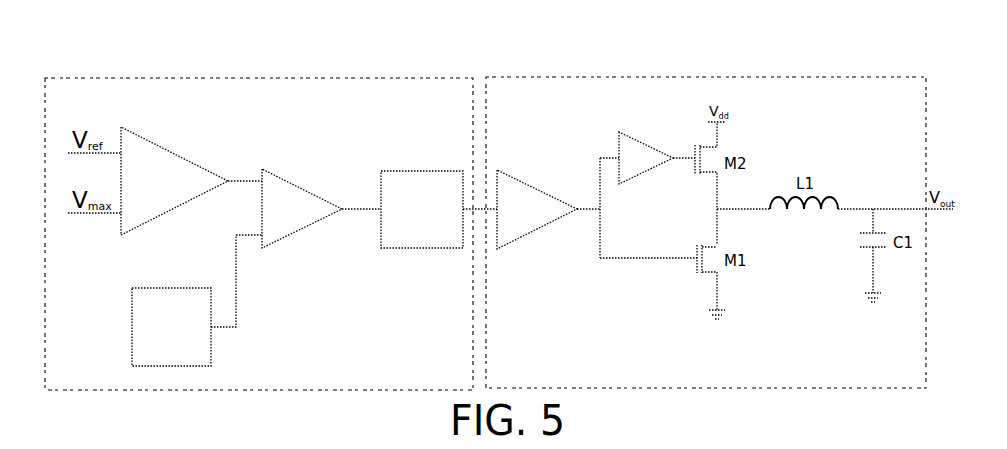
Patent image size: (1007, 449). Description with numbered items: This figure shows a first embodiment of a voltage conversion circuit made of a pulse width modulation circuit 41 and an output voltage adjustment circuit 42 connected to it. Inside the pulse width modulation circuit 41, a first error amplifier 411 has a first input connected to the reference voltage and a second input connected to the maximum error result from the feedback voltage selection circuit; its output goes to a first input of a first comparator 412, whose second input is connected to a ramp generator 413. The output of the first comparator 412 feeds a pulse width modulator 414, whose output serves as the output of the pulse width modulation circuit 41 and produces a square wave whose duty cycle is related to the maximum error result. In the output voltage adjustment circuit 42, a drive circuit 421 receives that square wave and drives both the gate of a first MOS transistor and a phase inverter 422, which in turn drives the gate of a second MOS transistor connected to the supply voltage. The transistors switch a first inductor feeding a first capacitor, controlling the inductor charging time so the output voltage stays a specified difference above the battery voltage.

The pulse width modulation circuit 41 is at (247, 78).
The output voltage adjustment circuit 42 is at (598, 78).
The first error amplifier 411 is at (163, 163).
The first comparator 412 is at (272, 193).
The ramp generator 413 is at (157, 288).
The pulse width modulator 414 is at (412, 171).
The drive circuit 421 is at (531, 187).
The phase inverter 422 is at (633, 141).